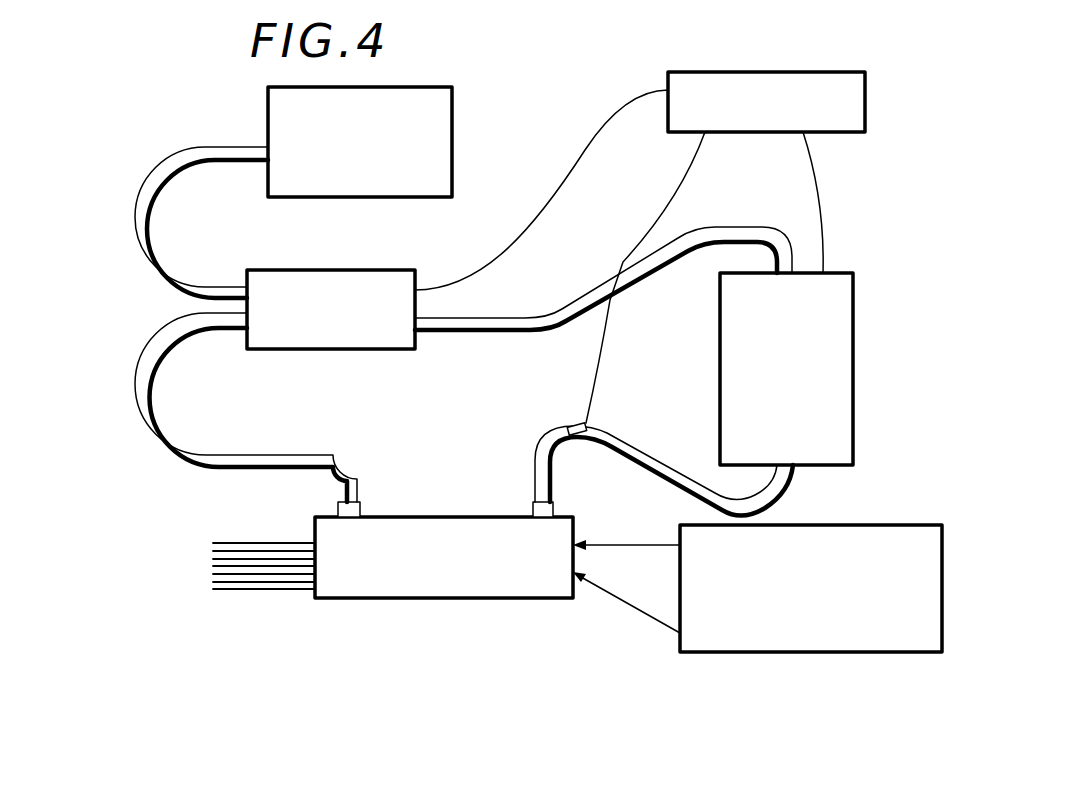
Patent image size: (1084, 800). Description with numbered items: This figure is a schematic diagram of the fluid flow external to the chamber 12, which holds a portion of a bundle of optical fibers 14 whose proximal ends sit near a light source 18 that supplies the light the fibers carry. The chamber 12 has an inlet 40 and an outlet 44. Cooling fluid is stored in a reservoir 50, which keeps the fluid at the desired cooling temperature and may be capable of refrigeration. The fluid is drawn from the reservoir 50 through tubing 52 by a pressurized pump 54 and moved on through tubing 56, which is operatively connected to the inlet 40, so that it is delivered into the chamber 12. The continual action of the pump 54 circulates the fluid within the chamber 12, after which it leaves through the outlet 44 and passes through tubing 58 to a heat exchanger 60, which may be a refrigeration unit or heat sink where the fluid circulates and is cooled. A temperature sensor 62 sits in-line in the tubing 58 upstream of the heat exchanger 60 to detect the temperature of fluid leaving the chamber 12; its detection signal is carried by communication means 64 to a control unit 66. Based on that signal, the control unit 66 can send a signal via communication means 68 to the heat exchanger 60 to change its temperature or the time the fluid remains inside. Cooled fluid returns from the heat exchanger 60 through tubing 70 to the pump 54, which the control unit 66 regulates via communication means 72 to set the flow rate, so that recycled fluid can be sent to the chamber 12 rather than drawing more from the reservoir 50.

The chamber 12 is at (445, 585).
The optical fibers 14 is at (272, 543).
The light source 18 is at (917, 540).
The inlet 40 is at (362, 510).
The outlet 44 is at (533, 510).
The reservoir 50 is at (287, 112).
The tubing 52 is at (152, 270).
The pump 54 is at (312, 284).
The tubing 56 is at (148, 432).
The tubing 58 is at (652, 450).
The heat exchanger 60 is at (858, 428).
The temperature sensor 62 is at (577, 423).
The communication means 64 is at (669, 206).
The control unit 66 is at (864, 103).
The communication means 68 is at (822, 210).
The tubing 70 is at (522, 336).
The communication means 72 is at (612, 122).